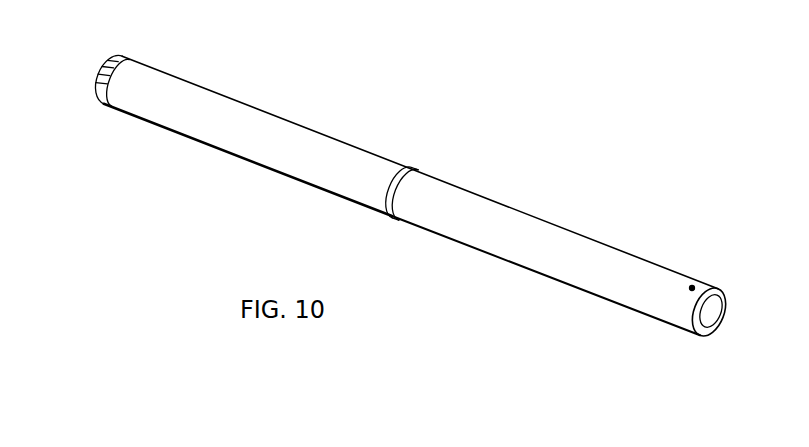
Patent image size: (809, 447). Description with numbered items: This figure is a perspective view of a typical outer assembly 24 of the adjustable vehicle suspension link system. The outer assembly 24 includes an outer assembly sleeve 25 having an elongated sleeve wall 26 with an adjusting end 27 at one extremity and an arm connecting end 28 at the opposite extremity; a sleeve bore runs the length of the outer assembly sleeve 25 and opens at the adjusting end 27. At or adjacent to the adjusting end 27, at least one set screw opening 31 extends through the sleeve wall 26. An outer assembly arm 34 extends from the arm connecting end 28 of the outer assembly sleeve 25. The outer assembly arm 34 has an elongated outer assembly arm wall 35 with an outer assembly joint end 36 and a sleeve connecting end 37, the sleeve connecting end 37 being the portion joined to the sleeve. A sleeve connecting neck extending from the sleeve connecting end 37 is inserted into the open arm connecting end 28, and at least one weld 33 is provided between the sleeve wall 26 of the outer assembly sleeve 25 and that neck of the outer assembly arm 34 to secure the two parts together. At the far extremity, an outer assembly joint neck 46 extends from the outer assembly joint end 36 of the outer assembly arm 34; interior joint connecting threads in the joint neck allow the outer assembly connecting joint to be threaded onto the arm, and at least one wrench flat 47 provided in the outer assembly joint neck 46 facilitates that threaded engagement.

The outer assembly 24 is at (595, 211).
The outer assembly sleeve 25 is at (500, 189).
The sleeve wall 26 is at (558, 250).
The adjusting end 27 is at (723, 311).
The arm connecting end 28 is at (393, 167).
The set screw opening 31 is at (693, 284).
The weld 33 is at (413, 168).
The outer assembly arm 34 is at (271, 171).
The outer assembly arm wall 35 is at (221, 126).
The outer assembly joint end 36 is at (107, 60).
The sleeve connecting end 37 is at (396, 198).
The outer assembly joint neck 46 is at (104, 86).
The wrench flat 47 is at (120, 56).